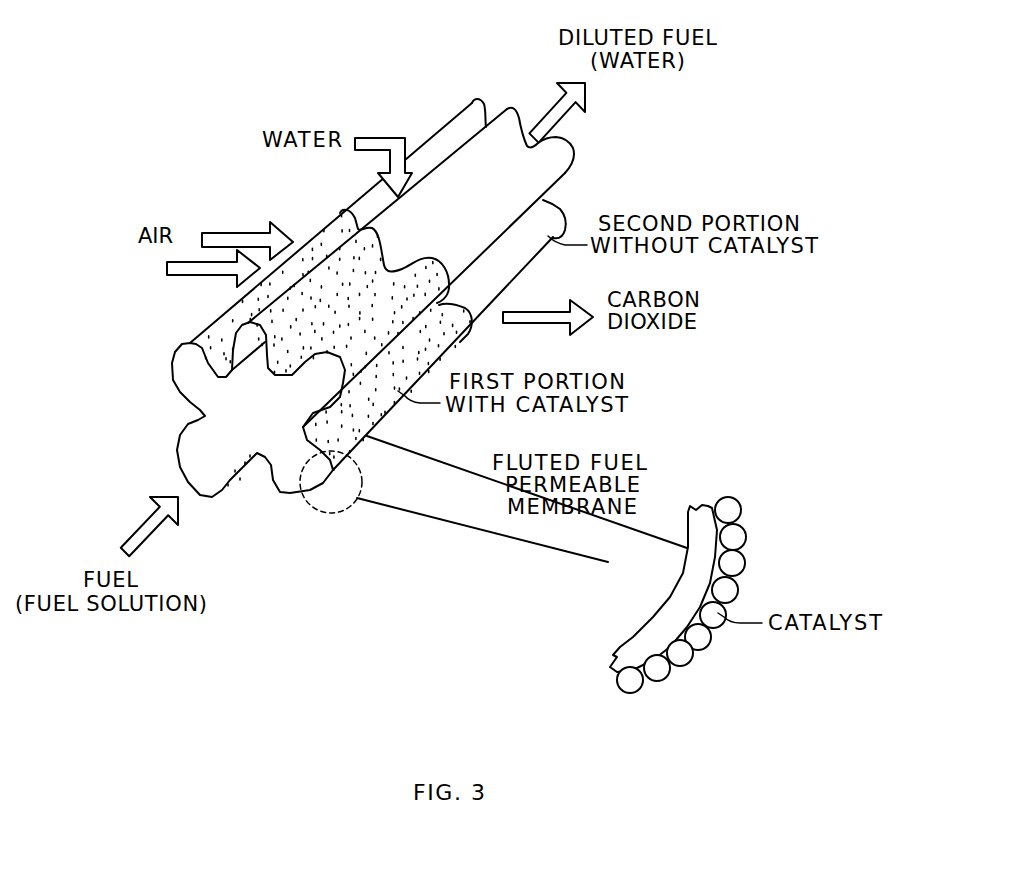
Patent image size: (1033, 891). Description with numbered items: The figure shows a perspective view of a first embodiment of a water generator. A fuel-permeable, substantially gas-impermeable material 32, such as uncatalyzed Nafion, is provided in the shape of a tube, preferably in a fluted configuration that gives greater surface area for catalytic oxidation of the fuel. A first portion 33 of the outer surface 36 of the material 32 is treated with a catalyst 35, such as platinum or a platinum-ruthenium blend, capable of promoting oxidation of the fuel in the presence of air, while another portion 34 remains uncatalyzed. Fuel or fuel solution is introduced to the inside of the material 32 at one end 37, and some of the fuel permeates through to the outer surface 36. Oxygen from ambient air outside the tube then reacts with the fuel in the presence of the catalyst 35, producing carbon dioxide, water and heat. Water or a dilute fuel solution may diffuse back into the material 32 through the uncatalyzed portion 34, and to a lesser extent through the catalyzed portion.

The fuel-permeable, substantially gas-impermeable material 32 is at (453, 113).
The first portion 33 is at (462, 343).
The uncatalyzed portion 34 is at (562, 210).
The catalyst 35 is at (211, 326).
The outer surface 36 is at (565, 148).
The end 37 is at (207, 419).